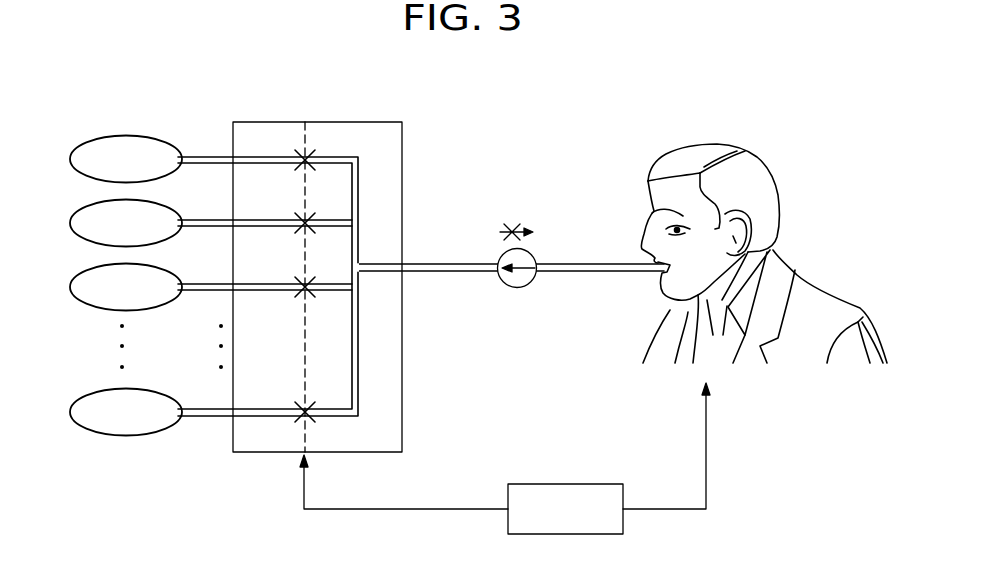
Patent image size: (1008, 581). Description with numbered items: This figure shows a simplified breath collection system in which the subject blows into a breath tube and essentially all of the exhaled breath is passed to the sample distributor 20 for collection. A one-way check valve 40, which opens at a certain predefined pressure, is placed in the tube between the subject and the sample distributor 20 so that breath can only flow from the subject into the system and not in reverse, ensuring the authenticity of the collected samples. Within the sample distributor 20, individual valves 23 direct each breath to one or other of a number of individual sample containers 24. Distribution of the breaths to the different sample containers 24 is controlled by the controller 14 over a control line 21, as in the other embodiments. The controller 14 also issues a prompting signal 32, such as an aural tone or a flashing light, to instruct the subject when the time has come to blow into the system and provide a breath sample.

The controller 14 is at (565, 484).
The sample distributor 20 is at (322, 122).
The control line 21 is at (425, 509).
The valves 23 is at (312, 157).
The sample containers 24 is at (147, 137).
The prompting signal 32 is at (708, 432).
The one-way check valve 40 is at (530, 283).